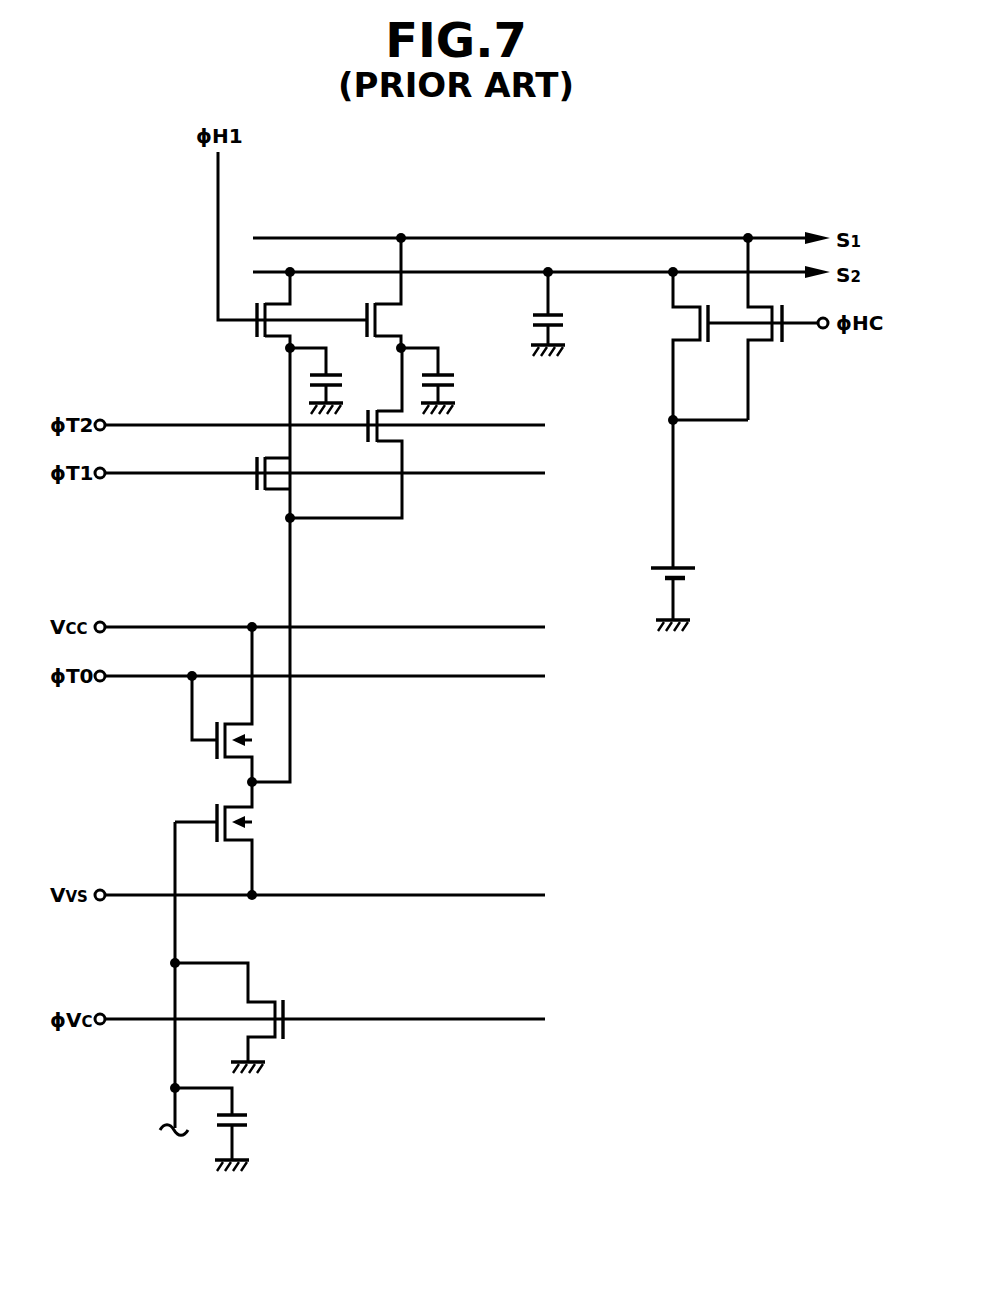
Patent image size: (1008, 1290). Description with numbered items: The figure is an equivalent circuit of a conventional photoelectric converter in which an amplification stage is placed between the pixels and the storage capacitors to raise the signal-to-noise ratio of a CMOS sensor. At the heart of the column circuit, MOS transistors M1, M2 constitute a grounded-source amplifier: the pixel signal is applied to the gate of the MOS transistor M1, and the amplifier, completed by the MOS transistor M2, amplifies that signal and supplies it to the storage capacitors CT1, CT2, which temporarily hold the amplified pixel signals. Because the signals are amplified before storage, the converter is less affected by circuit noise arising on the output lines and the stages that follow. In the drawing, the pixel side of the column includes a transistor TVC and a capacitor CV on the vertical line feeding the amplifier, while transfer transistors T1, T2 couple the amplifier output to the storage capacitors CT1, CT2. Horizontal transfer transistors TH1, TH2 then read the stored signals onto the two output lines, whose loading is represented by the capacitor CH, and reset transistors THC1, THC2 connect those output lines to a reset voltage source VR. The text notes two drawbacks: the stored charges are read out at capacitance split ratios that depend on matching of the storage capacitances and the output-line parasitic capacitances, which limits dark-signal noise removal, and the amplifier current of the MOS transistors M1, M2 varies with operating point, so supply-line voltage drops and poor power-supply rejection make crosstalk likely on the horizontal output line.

The horizontal transfer transistor TH1 is at (295, 310).
The horizontal transfer transistor TH2 is at (406, 293).
The storage capacitor CT1 is at (329, 380).
The storage capacitor CT2 is at (447, 381).
The horizontal output line capacitor CH is at (564, 314).
The reset transistor THC1 is at (668, 346).
The reset transistor THC2 is at (788, 329).
The transfer transistor T1 is at (271, 487).
The transfer transistor T2 is at (361, 433).
The reset voltage source VR is at (690, 525).
The MOS transistor M1 is at (207, 838).
The MOS transistor M2 is at (207, 704).
The vertical line reset transistor TVC is at (251, 1018).
The vertical output line capacitor CV is at (228, 1129).